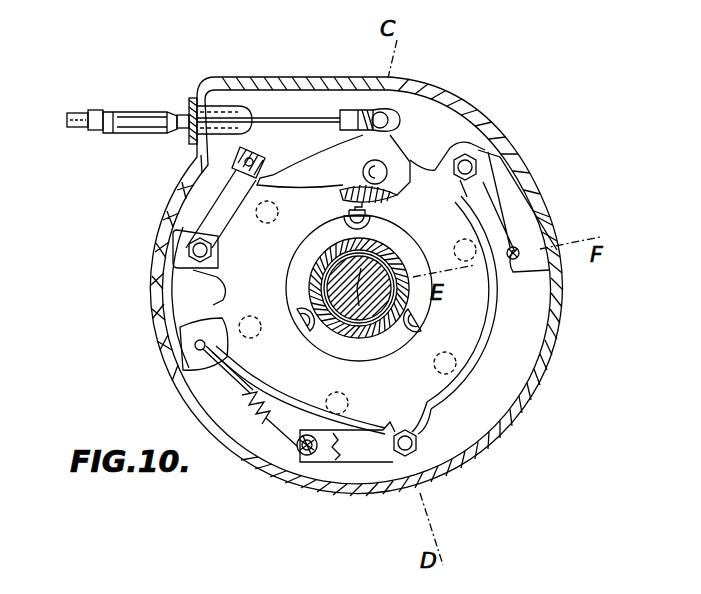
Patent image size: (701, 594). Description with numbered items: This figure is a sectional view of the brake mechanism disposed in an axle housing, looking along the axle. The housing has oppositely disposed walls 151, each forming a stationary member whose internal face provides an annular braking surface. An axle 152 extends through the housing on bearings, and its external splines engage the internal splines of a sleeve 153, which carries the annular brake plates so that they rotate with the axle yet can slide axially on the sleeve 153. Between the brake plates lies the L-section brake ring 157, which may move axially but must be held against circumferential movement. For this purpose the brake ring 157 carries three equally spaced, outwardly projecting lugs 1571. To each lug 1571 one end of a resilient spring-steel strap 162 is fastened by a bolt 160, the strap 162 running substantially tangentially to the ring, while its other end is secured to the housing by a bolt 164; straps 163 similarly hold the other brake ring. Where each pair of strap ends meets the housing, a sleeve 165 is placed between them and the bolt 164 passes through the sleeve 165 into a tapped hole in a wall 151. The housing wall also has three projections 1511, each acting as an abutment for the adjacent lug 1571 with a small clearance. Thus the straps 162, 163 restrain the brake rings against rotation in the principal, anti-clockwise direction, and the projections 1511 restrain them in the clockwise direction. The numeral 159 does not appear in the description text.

The walls 151 is at (193, 397).
The projections 1511 is at (520, 152).
The axle 152 is at (372, 276).
The sleeve 153 is at (338, 336).
The brake ring 157 is at (260, 302).
The lugs 1571 is at (507, 114).
The hole 159 is at (293, 251).
The bolt 160 is at (193, 258).
The strap 162 is at (185, 218).
The straps 163 is at (265, 178).
The bolt 164 is at (200, 160).
The sleeve 165 is at (238, 172).